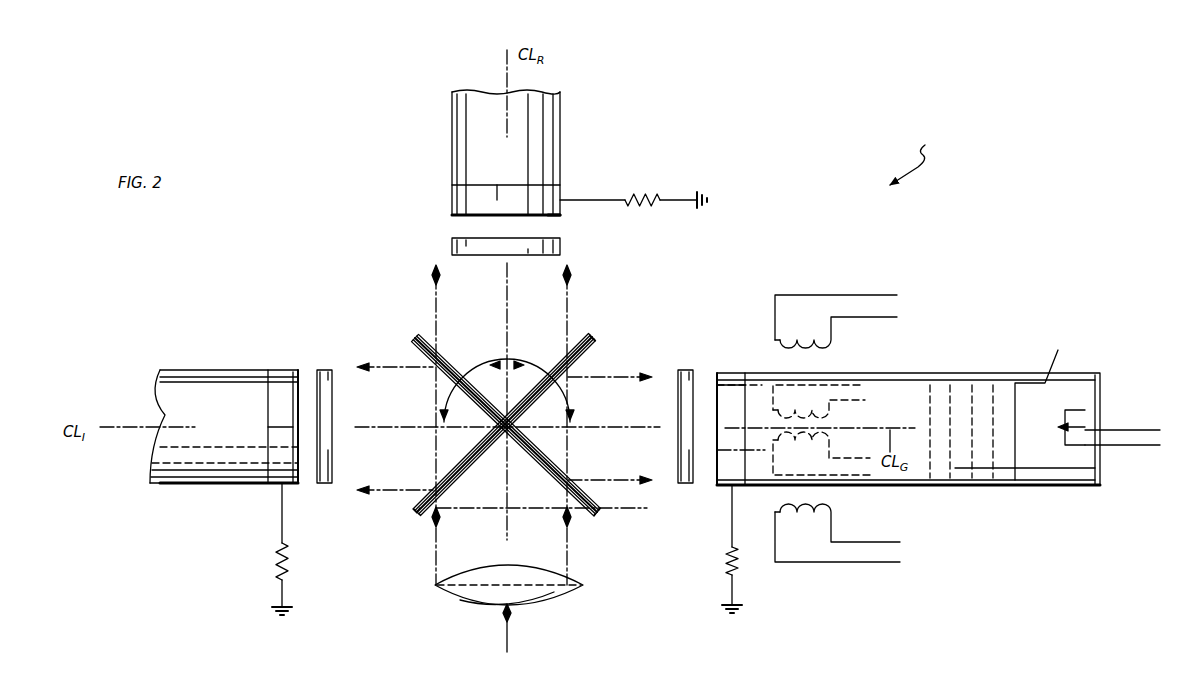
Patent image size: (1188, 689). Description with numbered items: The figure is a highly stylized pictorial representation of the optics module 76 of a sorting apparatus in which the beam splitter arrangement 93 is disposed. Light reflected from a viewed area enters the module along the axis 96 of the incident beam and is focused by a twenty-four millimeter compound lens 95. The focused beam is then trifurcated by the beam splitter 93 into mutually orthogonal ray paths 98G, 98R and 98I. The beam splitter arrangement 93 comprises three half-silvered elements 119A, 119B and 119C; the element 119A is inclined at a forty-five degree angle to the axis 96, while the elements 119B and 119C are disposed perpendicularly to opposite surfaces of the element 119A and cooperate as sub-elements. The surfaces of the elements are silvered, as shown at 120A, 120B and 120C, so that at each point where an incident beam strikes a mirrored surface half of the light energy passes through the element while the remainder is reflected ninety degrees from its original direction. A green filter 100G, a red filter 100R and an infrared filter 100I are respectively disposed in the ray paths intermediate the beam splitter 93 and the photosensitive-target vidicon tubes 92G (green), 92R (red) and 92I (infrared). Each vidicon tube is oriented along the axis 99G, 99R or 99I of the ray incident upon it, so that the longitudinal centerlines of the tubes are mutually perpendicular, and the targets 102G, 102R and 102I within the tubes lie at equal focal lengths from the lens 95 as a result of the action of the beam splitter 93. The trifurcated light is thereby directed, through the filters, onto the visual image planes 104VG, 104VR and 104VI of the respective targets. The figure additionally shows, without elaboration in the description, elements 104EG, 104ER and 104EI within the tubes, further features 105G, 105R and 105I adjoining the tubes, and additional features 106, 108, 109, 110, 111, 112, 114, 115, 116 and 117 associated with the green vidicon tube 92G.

The optics module 76 is at (914, 151).
The red vidicon tube 92R is at (553, 136).
The red vidicon target 102R is at (491, 195).
The red tube electrode 104ER is at (530, 183).
The red tube bias resistor 105R is at (650, 190).
The red filter 100R is at (452, 245).
The red visual image plane 104VR is at (545, 215).
The infrared vidicon tube 92I is at (172, 355).
The infrared tube electrode 104EI is at (268, 398).
The infrared visual image plane 104VI is at (299, 378).
The infrared filter 100I is at (326, 372).
The infrared vidicon target 102I is at (276, 425).
The infrared tube bias resistor 105I is at (277, 565).
The red ray path 98R is at (458, 430).
The red ray axis 99R is at (510, 318).
The infrared ray path 98I is at (507, 395).
The infrared ray axis 99I is at (382, 447).
The green ray path 98G is at (610, 393).
The green ray axis 99G is at (588, 430).
The half-silvered element 119B is at (592, 343).
The silvered surface 120B is at (595, 345).
The half-silvered element 119C is at (417, 505).
The silvered surface 120C is at (425, 518).
The half-silvered element 119A is at (600, 518).
The silvered surface 120A is at (577, 518).
The beam splitter arrangement 93 is at (500, 452).
The compound lens 95 is at (542, 600).
The incident beam axis 96 is at (508, 619).
The green visual image plane 104VG is at (712, 385).
The green tube electrode 104EG is at (748, 390).
The green filter 100G is at (685, 372).
The green vidicon target 102G is at (730, 390).
The focus coil 114 is at (833, 340).
The horizontal deflection coil 117 is at (833, 412).
The vertical deflection coil 116 is at (833, 445).
The alignment coil 115 is at (830, 530).
The green tube bias resistor 105G is at (738, 575).
The electrode 112 is at (930, 385).
The electrode 111 is at (950, 385).
The electrode 110 is at (972, 385).
The electrode 109 is at (993, 385).
The electrode 108 is at (1040, 380).
The cathode 106 is at (1085, 420).
The green vidicon tube 92G is at (1080, 490).